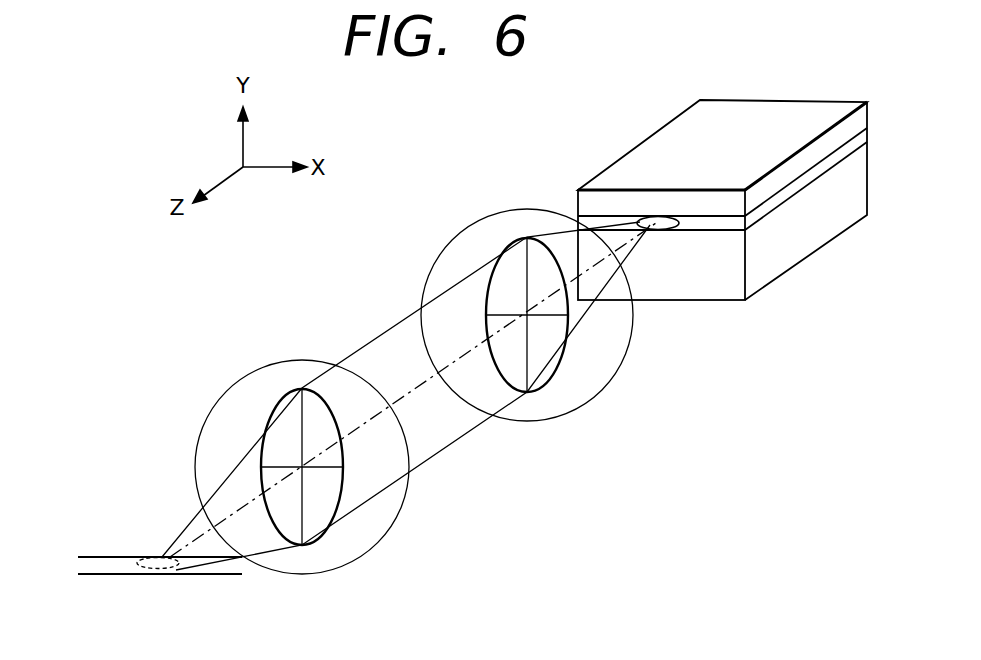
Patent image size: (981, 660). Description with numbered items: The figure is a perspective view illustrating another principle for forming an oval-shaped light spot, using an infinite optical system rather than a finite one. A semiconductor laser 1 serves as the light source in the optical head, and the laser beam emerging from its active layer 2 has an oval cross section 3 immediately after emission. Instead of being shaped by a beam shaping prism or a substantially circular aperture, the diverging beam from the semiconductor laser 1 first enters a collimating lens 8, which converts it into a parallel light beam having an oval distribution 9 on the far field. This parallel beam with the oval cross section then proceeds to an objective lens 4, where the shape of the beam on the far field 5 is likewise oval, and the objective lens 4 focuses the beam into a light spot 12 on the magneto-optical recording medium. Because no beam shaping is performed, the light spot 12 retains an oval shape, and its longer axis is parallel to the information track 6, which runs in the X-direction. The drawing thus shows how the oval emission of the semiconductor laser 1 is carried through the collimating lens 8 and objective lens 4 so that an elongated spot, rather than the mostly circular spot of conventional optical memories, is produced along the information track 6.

The semiconductor laser 1 is at (653, 152).
The active layer 2 is at (718, 226).
The cross-sectional shape of the laser beam 3 is at (672, 230).
The objective lens 4 is at (288, 361).
The shape of the beam on the far field 5 is at (327, 510).
The information track 6 is at (115, 560).
The collimating lens 8 is at (613, 378).
The distribution on the far field 9 is at (538, 355).
The light spot 12 is at (141, 570).